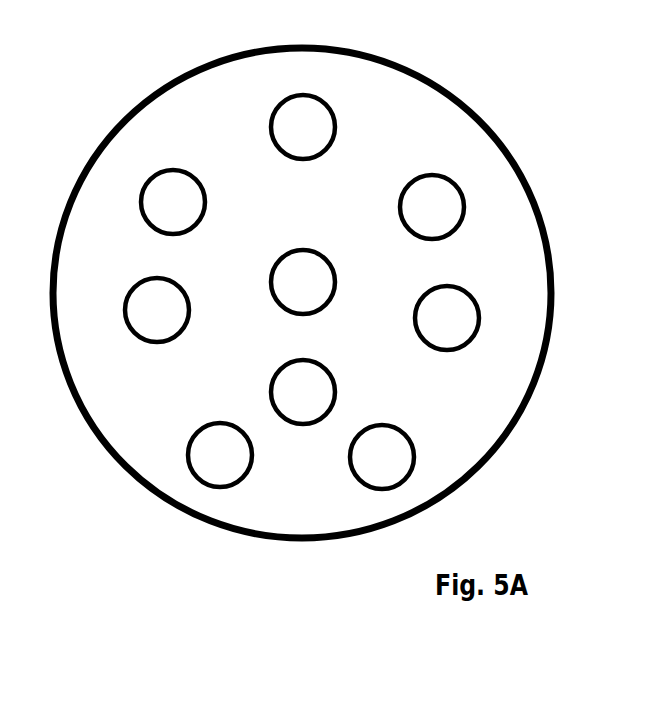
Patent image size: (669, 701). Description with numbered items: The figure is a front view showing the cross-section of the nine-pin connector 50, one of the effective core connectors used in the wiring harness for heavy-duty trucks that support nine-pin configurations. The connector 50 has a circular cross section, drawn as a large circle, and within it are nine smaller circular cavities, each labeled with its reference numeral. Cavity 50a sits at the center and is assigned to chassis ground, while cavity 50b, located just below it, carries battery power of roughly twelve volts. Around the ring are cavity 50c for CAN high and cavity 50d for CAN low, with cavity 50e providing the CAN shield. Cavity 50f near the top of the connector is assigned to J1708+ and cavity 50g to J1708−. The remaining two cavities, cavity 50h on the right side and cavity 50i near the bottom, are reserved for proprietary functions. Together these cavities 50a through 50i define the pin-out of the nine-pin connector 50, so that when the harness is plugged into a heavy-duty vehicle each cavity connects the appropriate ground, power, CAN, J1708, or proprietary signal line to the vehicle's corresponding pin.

The nine-pin connector 50 is at (556, 306).
The cavity 50a is at (303, 282).
The cavity 50b is at (303, 392).
The cavity 50c is at (220, 455).
The cavity 50d is at (157, 310).
The cavity 50e is at (173, 202).
The cavity 50f is at (303, 127).
The cavity 50g is at (432, 207).
The cavity 50h is at (447, 318).
The cavity 50i is at (382, 457).